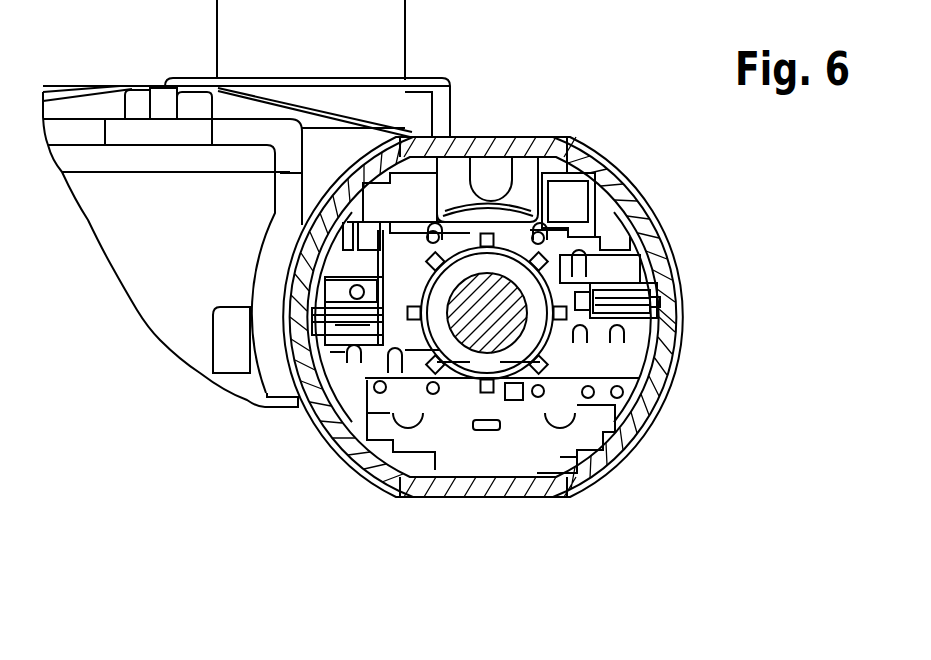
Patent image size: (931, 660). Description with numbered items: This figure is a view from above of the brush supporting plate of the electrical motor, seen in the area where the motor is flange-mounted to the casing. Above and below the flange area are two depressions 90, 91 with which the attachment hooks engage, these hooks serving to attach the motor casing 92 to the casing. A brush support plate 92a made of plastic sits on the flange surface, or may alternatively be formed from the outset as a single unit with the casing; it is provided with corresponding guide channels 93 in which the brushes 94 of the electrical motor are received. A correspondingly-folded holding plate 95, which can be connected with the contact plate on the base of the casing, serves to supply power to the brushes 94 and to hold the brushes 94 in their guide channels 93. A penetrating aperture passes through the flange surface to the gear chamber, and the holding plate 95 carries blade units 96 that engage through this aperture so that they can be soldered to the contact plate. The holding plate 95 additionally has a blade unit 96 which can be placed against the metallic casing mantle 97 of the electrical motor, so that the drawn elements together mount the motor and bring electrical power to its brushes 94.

The depression 90 is at (507, 177).
The depression 91 is at (498, 472).
The motor casing 92 is at (600, 220).
The brush support plate 92a is at (600, 248).
The guide channels 93 is at (605, 287).
The brushes 94 is at (617, 305).
The holding plate 95 is at (412, 395).
The blade units 96 is at (638, 393).
The metallic casing mantle 97 is at (607, 458).